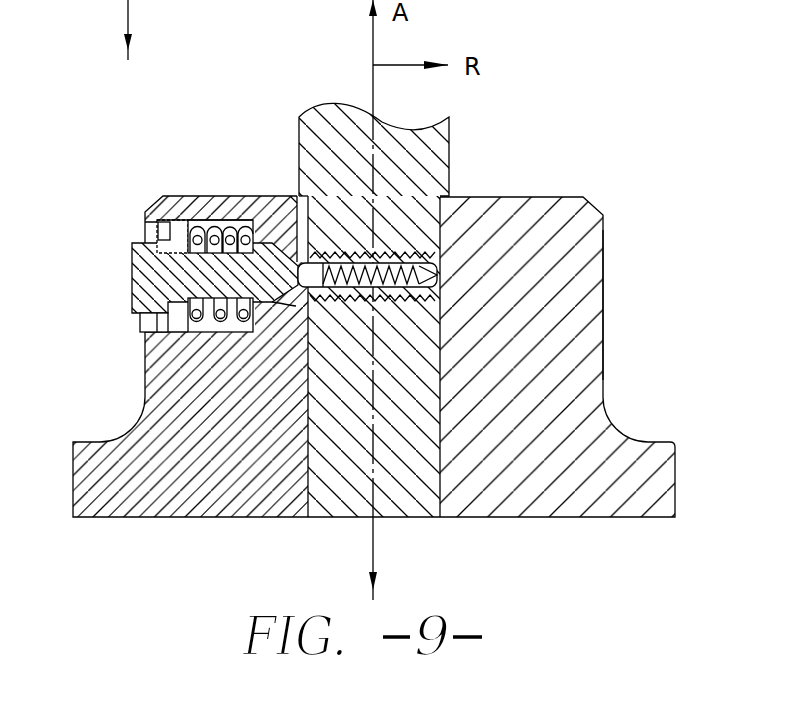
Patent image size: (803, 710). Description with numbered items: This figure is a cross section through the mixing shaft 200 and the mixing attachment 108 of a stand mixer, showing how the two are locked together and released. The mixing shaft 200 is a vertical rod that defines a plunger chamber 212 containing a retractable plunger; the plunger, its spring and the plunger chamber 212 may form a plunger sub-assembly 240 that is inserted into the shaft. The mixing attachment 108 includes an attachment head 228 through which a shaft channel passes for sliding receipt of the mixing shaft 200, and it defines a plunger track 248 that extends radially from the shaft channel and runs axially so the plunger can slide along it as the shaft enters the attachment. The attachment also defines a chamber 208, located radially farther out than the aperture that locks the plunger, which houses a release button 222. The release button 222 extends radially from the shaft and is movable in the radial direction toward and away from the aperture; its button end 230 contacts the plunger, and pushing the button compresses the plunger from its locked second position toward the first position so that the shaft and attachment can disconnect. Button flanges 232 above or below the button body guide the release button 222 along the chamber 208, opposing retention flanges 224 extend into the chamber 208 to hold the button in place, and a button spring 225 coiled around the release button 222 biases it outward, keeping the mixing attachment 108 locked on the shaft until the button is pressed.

The mixing attachment 108 is at (606, 268).
The mixing shaft 200 is at (451, 158).
The chamber 208 is at (145, 402).
The plunger chamber 212 is at (440, 303).
The release button 222 is at (132, 275).
The retention flange 224 is at (150, 236).
The button spring 225 is at (205, 195).
The attachment head 228 is at (606, 312).
The button end 230 is at (290, 304).
The button flanges 232 is at (160, 197).
The plunger sub-assembly 240 is at (173, 30).
The plunger track 248 is at (293, 197).